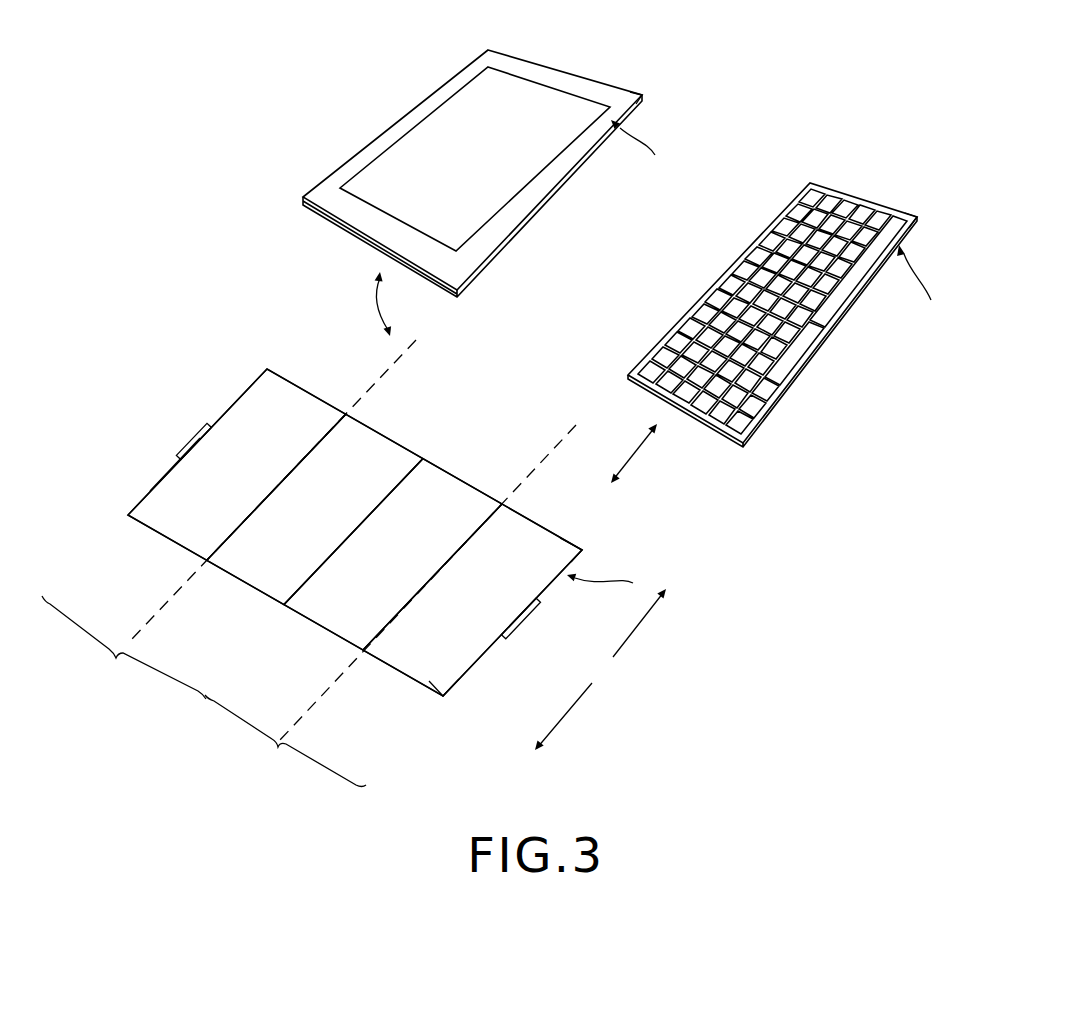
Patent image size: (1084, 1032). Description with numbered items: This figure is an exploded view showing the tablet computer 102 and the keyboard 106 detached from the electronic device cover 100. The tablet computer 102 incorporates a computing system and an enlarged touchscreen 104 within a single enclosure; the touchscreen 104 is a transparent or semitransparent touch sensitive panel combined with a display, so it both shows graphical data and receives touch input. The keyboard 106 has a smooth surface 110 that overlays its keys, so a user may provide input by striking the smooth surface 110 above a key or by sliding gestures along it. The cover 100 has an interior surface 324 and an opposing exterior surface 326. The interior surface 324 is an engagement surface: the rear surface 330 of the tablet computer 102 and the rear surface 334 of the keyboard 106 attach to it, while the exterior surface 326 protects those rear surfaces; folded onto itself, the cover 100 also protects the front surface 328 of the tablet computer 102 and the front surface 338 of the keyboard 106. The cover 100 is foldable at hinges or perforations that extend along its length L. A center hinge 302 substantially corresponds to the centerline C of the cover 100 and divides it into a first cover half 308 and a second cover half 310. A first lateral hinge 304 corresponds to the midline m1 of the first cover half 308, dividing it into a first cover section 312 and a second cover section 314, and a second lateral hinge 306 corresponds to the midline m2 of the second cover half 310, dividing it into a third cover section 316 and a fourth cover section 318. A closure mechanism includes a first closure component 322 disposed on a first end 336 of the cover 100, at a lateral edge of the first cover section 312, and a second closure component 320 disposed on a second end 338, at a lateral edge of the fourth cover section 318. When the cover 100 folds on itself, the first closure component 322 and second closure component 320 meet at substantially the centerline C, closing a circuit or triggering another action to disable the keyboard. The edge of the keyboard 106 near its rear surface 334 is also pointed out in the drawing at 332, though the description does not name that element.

The electronic device cover 100 is at (140, 513).
The tablet computer 102 is at (325, 188).
The touchscreen 104 is at (512, 88).
The keyboard 106 is at (663, 343).
The smooth surface 110 is at (770, 382).
The center hinge 302 is at (413, 470).
The first lateral hinge 304 is at (492, 515).
The second lateral hinge 306 is at (330, 432).
The first cover half 308 is at (285, 741).
The second cover half 310 is at (124, 647).
The first cover section 312 is at (468, 604).
The second cover section 314 is at (382, 563).
The third cover section 316 is at (295, 520).
The fourth cover section 318 is at (222, 474).
The second closure component 320 is at (210, 420).
The first closure component 322 is at (527, 628).
The interior surface 324 is at (567, 550).
The exterior surface 326 is at (620, 583).
The front surface of the tablet computer 328 is at (625, 98).
The rear surface of the tablet computer 330 is at (647, 154).
The edge of keyboard 332 is at (893, 217).
The rear surface of the keyboard 334 is at (929, 290).
The first end 336 is at (452, 698).
The second end 338 is at (162, 473).
The midline of the first cover half m1 is at (315, 700).
The midline of the second cover half m2 is at (163, 608).
The centerline C is at (240, 655).
The length L is at (600, 669).